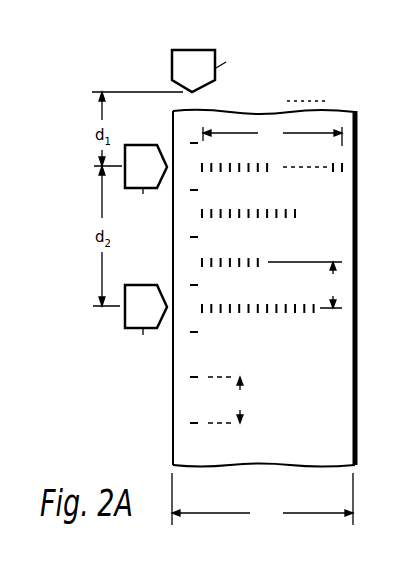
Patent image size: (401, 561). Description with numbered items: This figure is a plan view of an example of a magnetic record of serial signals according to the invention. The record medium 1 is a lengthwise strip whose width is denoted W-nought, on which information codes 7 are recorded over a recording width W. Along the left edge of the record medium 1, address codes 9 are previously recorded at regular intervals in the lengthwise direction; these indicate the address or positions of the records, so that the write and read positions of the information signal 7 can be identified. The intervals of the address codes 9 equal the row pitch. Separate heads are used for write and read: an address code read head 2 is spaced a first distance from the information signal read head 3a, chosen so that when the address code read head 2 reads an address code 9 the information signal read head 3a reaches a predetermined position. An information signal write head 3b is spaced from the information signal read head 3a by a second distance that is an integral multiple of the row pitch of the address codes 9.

The magnetic record medium 1 is at (276, 311).
The address code read head 2 is at (208, 55).
The information signal read head 3a is at (141, 147).
The information signal write head 3b is at (143, 288).
The information codes 7 is at (364, 113).
The address codes 9 is at (191, 430).